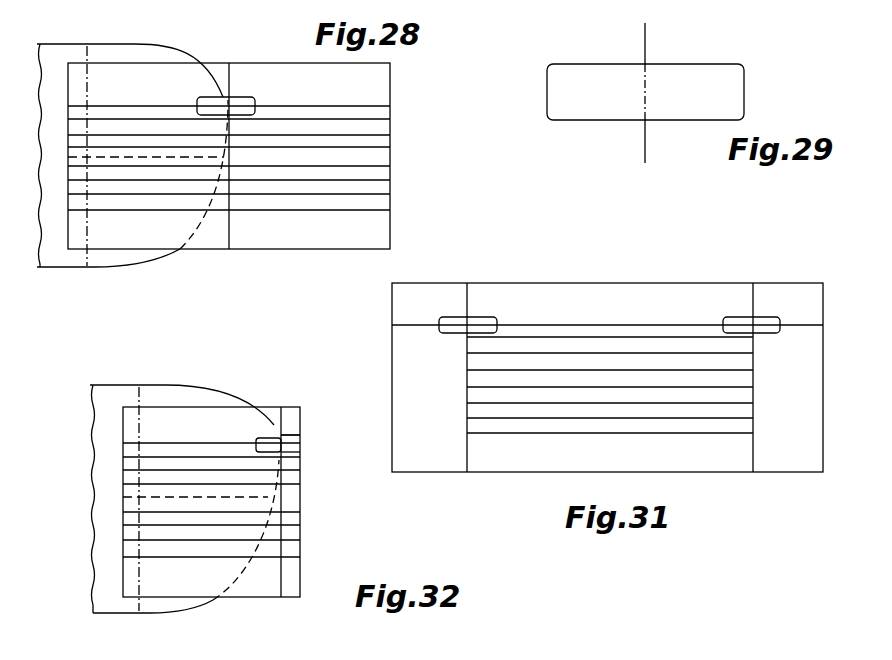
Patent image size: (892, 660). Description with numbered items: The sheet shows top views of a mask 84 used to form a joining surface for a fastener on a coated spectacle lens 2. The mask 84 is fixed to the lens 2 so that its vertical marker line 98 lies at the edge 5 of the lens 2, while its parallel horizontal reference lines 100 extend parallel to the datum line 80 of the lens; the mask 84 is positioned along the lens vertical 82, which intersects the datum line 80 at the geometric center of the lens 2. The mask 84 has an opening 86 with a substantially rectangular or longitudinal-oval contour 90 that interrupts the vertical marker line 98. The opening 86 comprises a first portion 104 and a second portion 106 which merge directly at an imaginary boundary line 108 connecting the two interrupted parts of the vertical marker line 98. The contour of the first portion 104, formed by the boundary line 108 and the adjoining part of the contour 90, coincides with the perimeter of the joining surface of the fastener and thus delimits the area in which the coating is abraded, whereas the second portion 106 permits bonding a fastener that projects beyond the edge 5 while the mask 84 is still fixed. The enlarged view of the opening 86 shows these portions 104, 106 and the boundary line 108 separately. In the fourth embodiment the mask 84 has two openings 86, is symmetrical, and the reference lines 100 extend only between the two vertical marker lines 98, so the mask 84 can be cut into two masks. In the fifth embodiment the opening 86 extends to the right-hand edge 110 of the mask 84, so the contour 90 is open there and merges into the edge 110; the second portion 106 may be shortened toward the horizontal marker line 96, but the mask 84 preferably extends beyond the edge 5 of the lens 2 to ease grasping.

In FIG. 28, the lens 2 is at (50, 228).
In FIG. 32, the lens 2 is at (100, 576).
In FIG. 28, the edge of the lens 5 is at (58, 268).
In FIG. 32, the edge of the lens 5 is at (213, 607).
In FIG. 28, the datum line 80 is at (56, 158).
In FIG. 32, the datum line 80 is at (98, 508).
In FIG. 28, the lens vertical 82 is at (104, 52).
In FIG. 32, the lens vertical 82 is at (140, 388).
In FIG. 28, the mask 84 is at (328, 236).
In FIG. 31, the mask 84 is at (410, 366).
In FIG. 32, the mask 84 is at (260, 587).
In FIG. 28, the opening 86 is at (243, 100).
In FIG. 29, the opening 86 is at (706, 181).
In FIG. 31, the opening 86 is at (448, 317).
In FIG. 32, the opening 86 is at (349, 404).
In FIG. 28, the contour 90 is at (213, 92).
In FIG. 29, the contour 90 is at (573, 55).
In FIG. 32, the contour 90 is at (267, 430).
In FIG. 28, the horizontal marker line 96 is at (368, 104).
In FIG. 31, the horizontal marker line 96 is at (568, 324).
In FIG. 28, the vertical marker line 98 is at (236, 233).
In FIG. 29, the vertical marker line 98 is at (645, 40).
In FIG. 31, the vertical marker line 98 is at (470, 452).
In FIG. 32, the vertical marker line 98 is at (284, 580).
In FIG. 28, the reference lines 100 is at (372, 147).
In FIG. 31, the reference lines 100 is at (735, 370).
In FIG. 32, the reference lines 100 is at (211, 500).
In FIG. 29, the first portion 104 is at (614, 110).
In FIG. 32, the first portion 104 is at (300, 422).
In FIG. 29, the second portion 106 is at (686, 112).
In FIG. 32, the second portion 106 is at (292, 446).
In FIG. 29, the boundary line 108 is at (652, 90).
In FIG. 32, the edge of the mask 110 is at (304, 538).